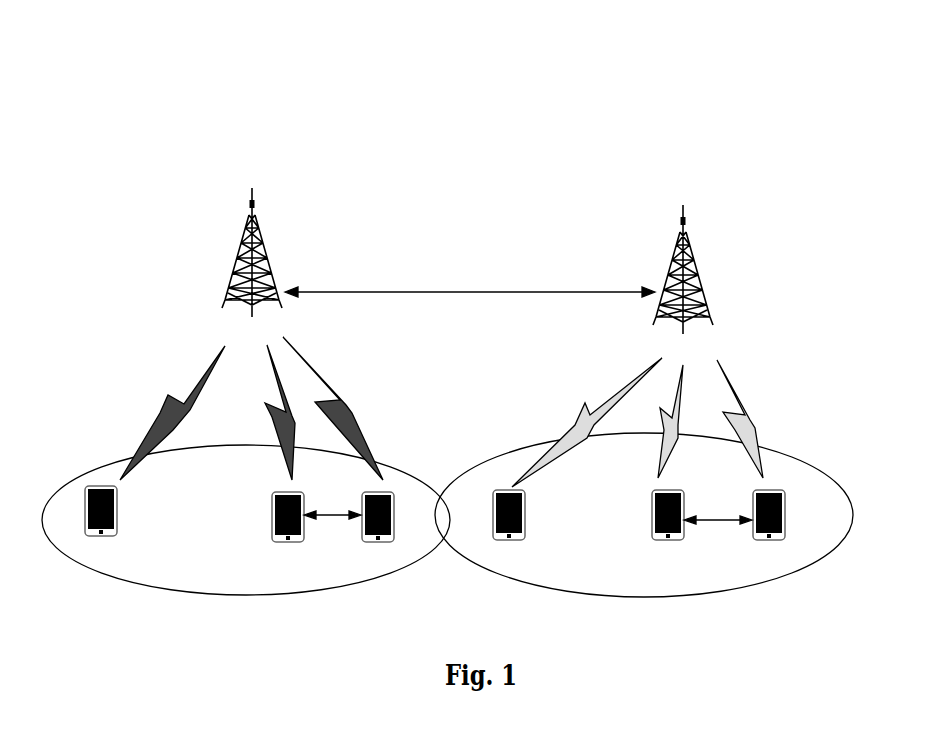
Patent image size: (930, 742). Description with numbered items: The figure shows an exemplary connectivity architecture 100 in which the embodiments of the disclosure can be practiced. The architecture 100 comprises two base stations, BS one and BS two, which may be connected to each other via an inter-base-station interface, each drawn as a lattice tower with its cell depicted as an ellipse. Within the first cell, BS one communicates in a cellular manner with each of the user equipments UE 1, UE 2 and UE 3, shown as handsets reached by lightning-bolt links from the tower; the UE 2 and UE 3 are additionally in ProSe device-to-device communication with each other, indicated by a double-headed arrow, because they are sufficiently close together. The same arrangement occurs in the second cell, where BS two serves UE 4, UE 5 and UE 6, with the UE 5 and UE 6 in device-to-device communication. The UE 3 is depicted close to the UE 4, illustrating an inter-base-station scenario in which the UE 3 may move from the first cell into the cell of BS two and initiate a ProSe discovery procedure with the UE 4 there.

The connectivity architecture 100 is at (447, 309).
The UE 1 is at (154, 455).
The UE 2 is at (289, 455).
The UE 3 is at (338, 451).
The UE 4 is at (576, 463).
The UE 5 is at (668, 467).
The UE 6 is at (754, 464).